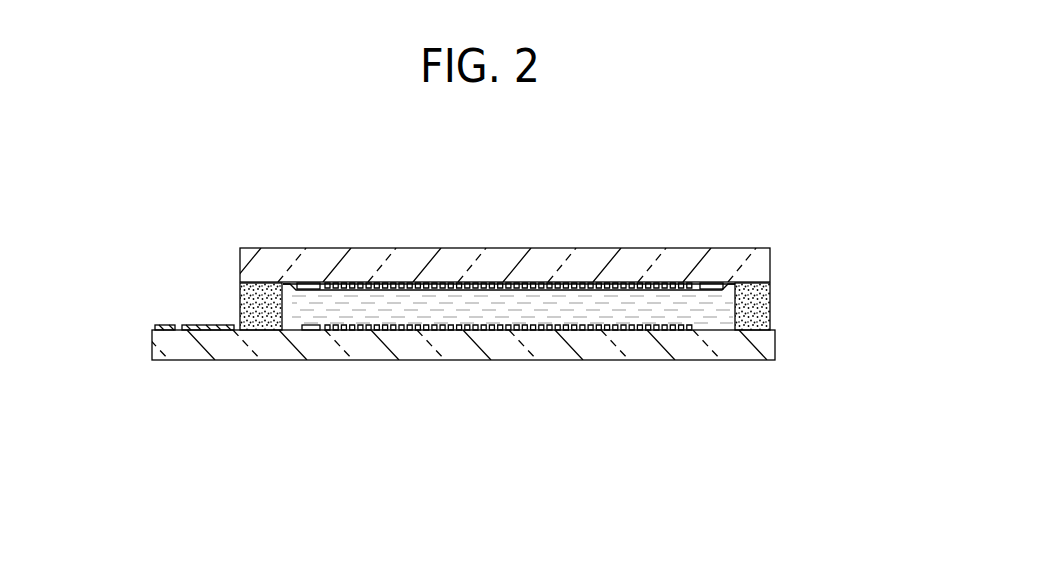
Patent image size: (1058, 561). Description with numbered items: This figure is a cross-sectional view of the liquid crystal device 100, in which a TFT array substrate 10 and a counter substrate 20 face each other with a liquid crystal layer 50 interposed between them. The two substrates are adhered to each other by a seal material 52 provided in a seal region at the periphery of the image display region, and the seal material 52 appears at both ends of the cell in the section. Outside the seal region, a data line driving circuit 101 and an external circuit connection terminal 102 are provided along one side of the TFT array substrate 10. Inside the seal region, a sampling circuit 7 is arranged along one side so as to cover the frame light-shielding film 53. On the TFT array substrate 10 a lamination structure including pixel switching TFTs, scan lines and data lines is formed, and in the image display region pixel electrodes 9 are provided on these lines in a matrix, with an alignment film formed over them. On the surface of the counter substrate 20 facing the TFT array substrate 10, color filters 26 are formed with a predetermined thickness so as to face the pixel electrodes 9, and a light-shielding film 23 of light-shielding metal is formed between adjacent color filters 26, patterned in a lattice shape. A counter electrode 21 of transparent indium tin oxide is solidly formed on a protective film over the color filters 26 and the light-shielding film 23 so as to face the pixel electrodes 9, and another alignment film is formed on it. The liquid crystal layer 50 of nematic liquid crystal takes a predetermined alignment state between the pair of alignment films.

The liquid crystal device 100 is at (725, 128).
The counter substrate 20 is at (762, 263).
The TFT array substrate 10 is at (552, 352).
The seal material 52 is at (257, 307).
The frame light-shielding film 53 is at (307, 283).
The light-shielding film 23 is at (455, 280).
The counter electrode 21 is at (575, 290).
The color filters 26 is at (497, 286).
The pixel electrodes 9 is at (360, 332).
The sampling circuit 7 is at (310, 329).
The liquid crystal layer 50 is at (715, 316).
The data line driving circuit 101 is at (205, 325).
The external circuit connection terminal 102 is at (163, 325).